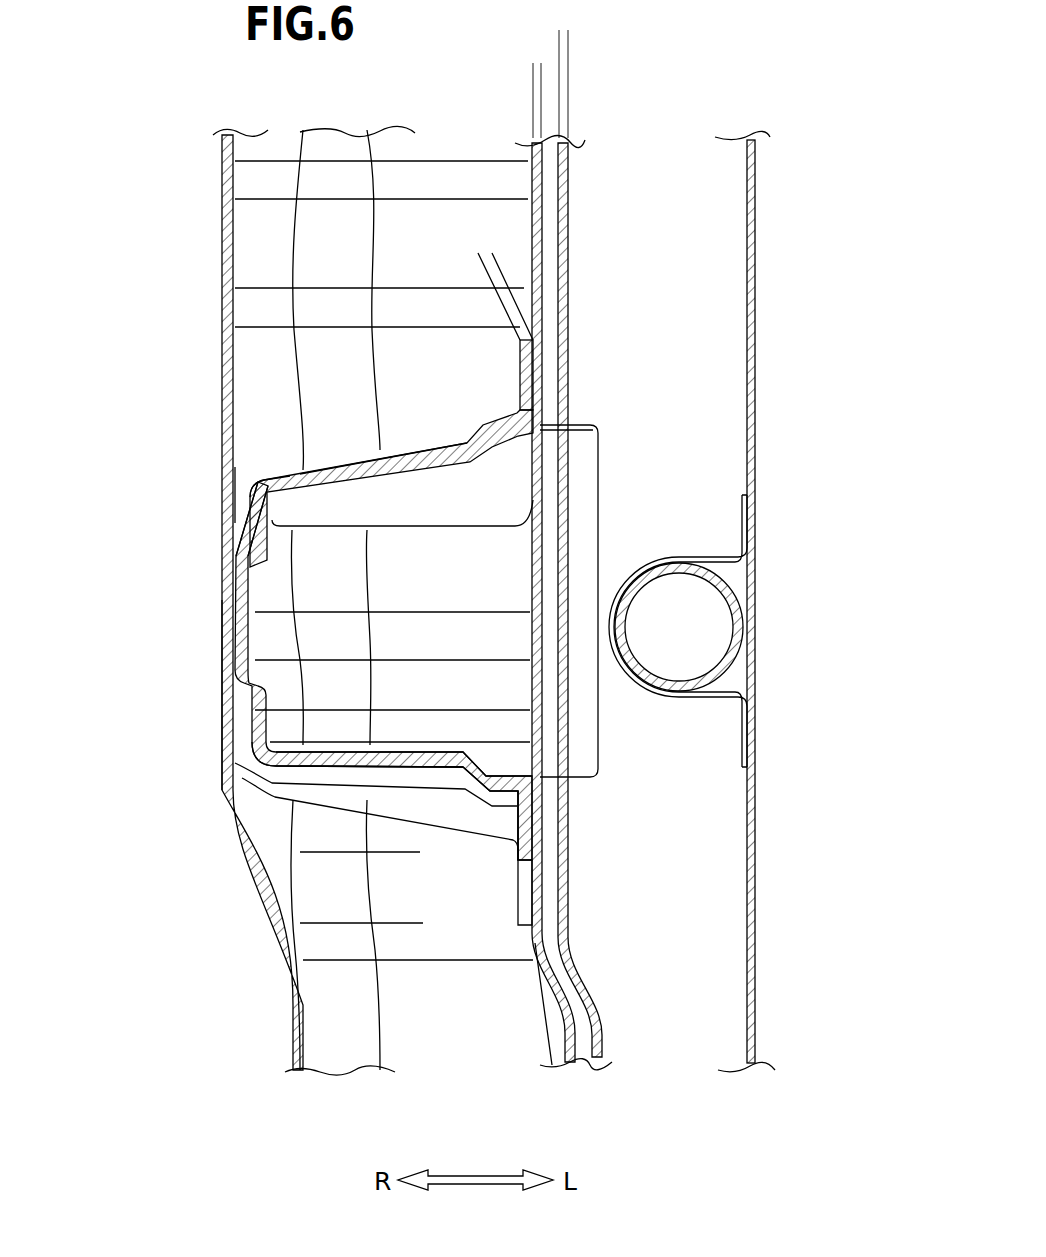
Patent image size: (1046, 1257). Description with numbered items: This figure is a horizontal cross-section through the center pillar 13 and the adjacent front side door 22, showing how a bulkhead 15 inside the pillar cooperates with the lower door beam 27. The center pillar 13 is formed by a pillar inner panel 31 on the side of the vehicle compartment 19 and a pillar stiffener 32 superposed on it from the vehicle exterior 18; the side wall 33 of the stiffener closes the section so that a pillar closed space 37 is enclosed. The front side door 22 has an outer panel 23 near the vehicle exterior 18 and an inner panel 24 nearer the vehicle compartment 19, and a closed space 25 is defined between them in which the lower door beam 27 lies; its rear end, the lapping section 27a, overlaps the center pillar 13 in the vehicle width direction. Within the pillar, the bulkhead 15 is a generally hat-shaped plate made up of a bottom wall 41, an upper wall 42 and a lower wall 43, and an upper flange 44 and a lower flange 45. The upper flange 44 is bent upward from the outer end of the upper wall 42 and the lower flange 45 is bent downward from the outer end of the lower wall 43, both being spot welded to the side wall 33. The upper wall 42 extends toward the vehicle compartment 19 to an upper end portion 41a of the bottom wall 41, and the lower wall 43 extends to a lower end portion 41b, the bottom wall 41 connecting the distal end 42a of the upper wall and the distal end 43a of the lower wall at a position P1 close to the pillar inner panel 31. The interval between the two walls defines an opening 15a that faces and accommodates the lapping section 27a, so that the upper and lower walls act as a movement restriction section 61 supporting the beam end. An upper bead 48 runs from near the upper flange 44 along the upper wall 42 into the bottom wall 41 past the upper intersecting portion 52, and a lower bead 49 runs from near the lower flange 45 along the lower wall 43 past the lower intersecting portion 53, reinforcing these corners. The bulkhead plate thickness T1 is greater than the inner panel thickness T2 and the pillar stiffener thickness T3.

The center pillar 13 is at (181, 602).
The pillar inner panel 31 is at (222, 352).
The vehicle compartment 19 is at (120, 500).
The pillar closed space 37 is at (345, 262).
The position P1 is at (235, 467).
The side wall 33 is at (619, 602).
The pillar stiffener 32 is at (542, 262).
The inner panel 24 is at (568, 402).
The closed space 25 is at (678, 370).
The front side door 22 is at (813, 601).
The outer panel 23 is at (757, 400).
The vehicle exterior 18 is at (871, 531).
The upper flange 44 is at (540, 368).
The movement restriction section 61 is at (340, 642).
The upper wall 42 is at (430, 500).
The distal end of the upper wall 42a is at (257, 487).
The upper bead 48 is at (390, 455).
The upper intersecting portion 52 is at (280, 523).
The bottom wall 41 is at (245, 643).
The upper end portion of the bottom wall 41a is at (250, 503).
The lower end portion of the bottom wall 41b is at (242, 770).
The lower wall 43 is at (425, 808).
The lower bead 49 is at (365, 768).
The lower intersecting portion 53 is at (262, 783).
The distal end of the lower wall 43a is at (283, 793).
The lower flange 45 is at (542, 830).
The bulkhead 15 is at (212, 703).
The opening 15a is at (595, 773).
The lapping section 27a is at (760, 631).
The lower door beam 27 is at (747, 665).
The plate thickness dimension T1 is at (502, 250).
The plate thickness dimension T2 is at (540, 40).
The plate thickness dimension T3 is at (556, 73).